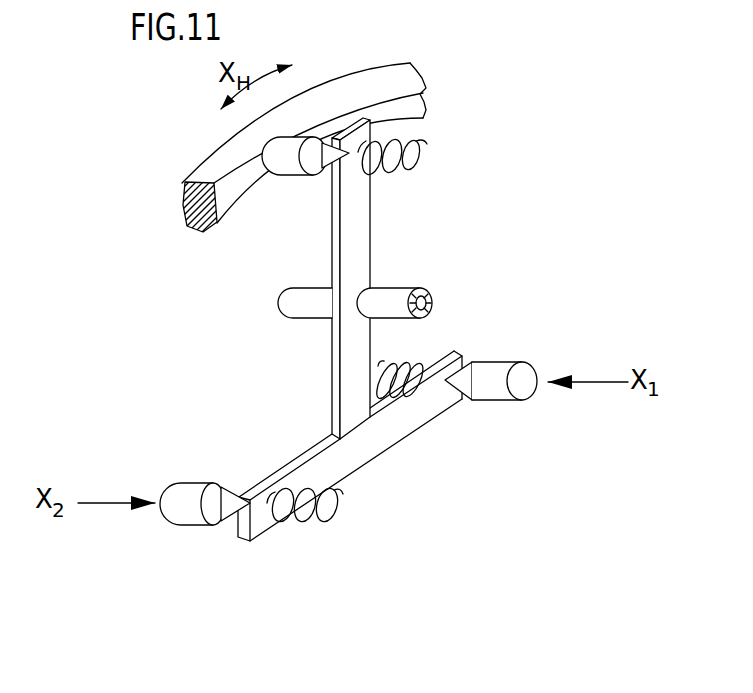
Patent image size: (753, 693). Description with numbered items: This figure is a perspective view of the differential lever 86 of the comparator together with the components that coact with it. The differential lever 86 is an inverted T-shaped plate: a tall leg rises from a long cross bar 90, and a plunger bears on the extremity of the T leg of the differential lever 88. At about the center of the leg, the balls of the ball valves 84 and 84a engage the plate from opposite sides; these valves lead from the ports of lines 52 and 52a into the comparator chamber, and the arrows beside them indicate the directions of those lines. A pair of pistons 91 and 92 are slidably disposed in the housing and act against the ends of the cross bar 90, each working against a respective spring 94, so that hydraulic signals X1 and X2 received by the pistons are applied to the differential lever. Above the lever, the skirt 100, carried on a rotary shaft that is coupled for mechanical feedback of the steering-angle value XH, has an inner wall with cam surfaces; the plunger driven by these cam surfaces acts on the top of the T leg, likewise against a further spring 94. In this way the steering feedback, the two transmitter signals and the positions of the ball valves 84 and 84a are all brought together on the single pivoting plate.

The skirt 100 is at (369, 117).
The spring 94 is at (356, 352).
The differential lever 86 is at (471, 278).
The differential lever 88 is at (483, 256).
The line 52 is at (265, 302).
The line 52a is at (445, 303).
The ball valve 84 is at (217, 341).
The ball valve 84a is at (260, 364).
The piston 91 is at (524, 360).
The cross bar 90 is at (323, 474).
The piston 92 is at (176, 525).